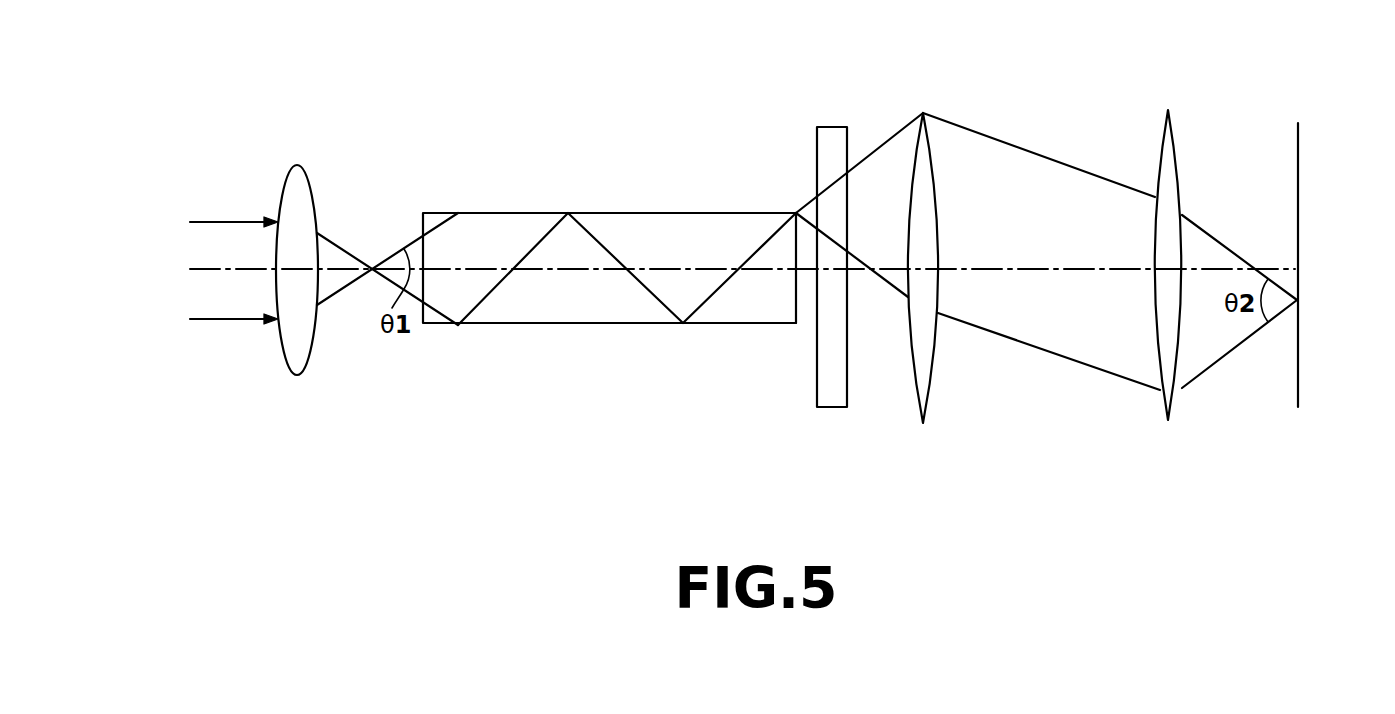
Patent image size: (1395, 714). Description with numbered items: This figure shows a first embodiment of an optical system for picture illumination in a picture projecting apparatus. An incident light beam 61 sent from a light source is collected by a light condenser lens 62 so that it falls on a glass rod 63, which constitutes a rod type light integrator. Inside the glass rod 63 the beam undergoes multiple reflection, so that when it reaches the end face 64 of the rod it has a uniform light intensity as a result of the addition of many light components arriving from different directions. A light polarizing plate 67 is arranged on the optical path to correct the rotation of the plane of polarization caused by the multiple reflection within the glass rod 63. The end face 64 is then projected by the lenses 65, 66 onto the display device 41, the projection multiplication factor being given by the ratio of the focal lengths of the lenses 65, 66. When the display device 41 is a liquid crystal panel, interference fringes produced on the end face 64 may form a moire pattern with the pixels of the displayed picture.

The incident light beam 61 is at (222, 217).
The light condenser lens 62 is at (303, 178).
The glass rod 63 is at (537, 213).
The end face 64 is at (802, 307).
The lens 65 is at (923, 118).
The lens 66 is at (1168, 115).
The light polarizing plate 67 is at (835, 133).
The display device 41 is at (1298, 135).